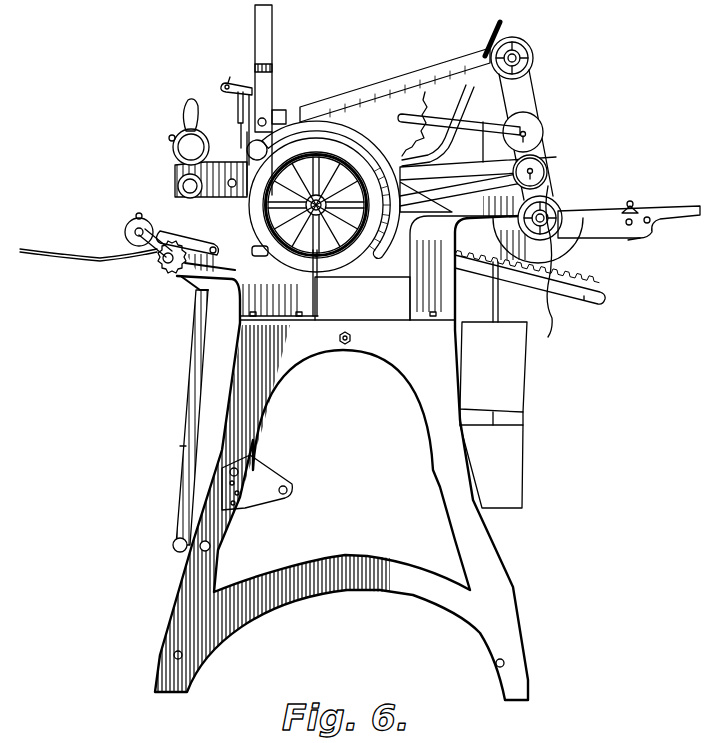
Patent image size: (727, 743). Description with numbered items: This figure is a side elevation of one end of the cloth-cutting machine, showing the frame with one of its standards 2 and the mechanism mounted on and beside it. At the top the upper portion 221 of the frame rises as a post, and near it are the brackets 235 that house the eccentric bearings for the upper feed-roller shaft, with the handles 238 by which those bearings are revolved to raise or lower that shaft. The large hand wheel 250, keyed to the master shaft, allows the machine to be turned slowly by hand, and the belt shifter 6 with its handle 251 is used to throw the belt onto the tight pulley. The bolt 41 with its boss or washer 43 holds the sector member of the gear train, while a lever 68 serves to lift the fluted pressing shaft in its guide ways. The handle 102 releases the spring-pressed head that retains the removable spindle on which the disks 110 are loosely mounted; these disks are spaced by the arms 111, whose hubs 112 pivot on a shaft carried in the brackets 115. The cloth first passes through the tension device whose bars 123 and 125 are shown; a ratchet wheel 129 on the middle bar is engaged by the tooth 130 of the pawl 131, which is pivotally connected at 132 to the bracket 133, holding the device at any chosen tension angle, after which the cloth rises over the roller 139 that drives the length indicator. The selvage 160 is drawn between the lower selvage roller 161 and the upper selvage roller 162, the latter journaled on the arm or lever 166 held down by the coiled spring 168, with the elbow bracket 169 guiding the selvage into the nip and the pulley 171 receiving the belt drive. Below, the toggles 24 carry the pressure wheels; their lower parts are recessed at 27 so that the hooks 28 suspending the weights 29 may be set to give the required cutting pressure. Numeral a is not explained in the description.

The standards 2 is at (218, 645).
The belt shifter 6 is at (298, 128).
The toggles 24 is at (582, 299).
The recesses 27 is at (574, 287).
The hooks 28 is at (499, 302).
The weights 29 is at (523, 418).
The bolt 41 is at (185, 446).
The rod portion a is at (175, 436).
The boss or washer 43 is at (398, 92).
The levers 68 is at (484, 46).
The handle 102 is at (535, 70).
The disks 110 is at (566, 200).
The arms 111 is at (655, 232).
The hubs 112 is at (636, 208).
The brackets 115 is at (626, 241).
The bar 123 is at (200, 298).
The bar 125 is at (125, 233).
The ratchet wheel 129 is at (162, 275).
The tooth 130 is at (168, 234).
The pawl 131 is at (200, 244).
The pivotal connection 132 is at (256, 257).
The bracket 133 is at (310, 280).
The roller 139 is at (262, 480).
The selvage 160 is at (552, 332).
The lower selvage roller 161 is at (548, 166).
The upper selvage roller 162 is at (544, 134).
The arm or lever 166 is at (466, 128).
The coiled spring 168 is at (404, 140).
The elbow bracket 169 is at (470, 126).
The pulley 171 is at (556, 180).
The upper portion of frame 221 is at (256, 45).
The brackets 235 is at (176, 162).
The handles 238 is at (184, 105).
The hand wheel 250 is at (342, 268).
The handle 251 is at (250, 71).